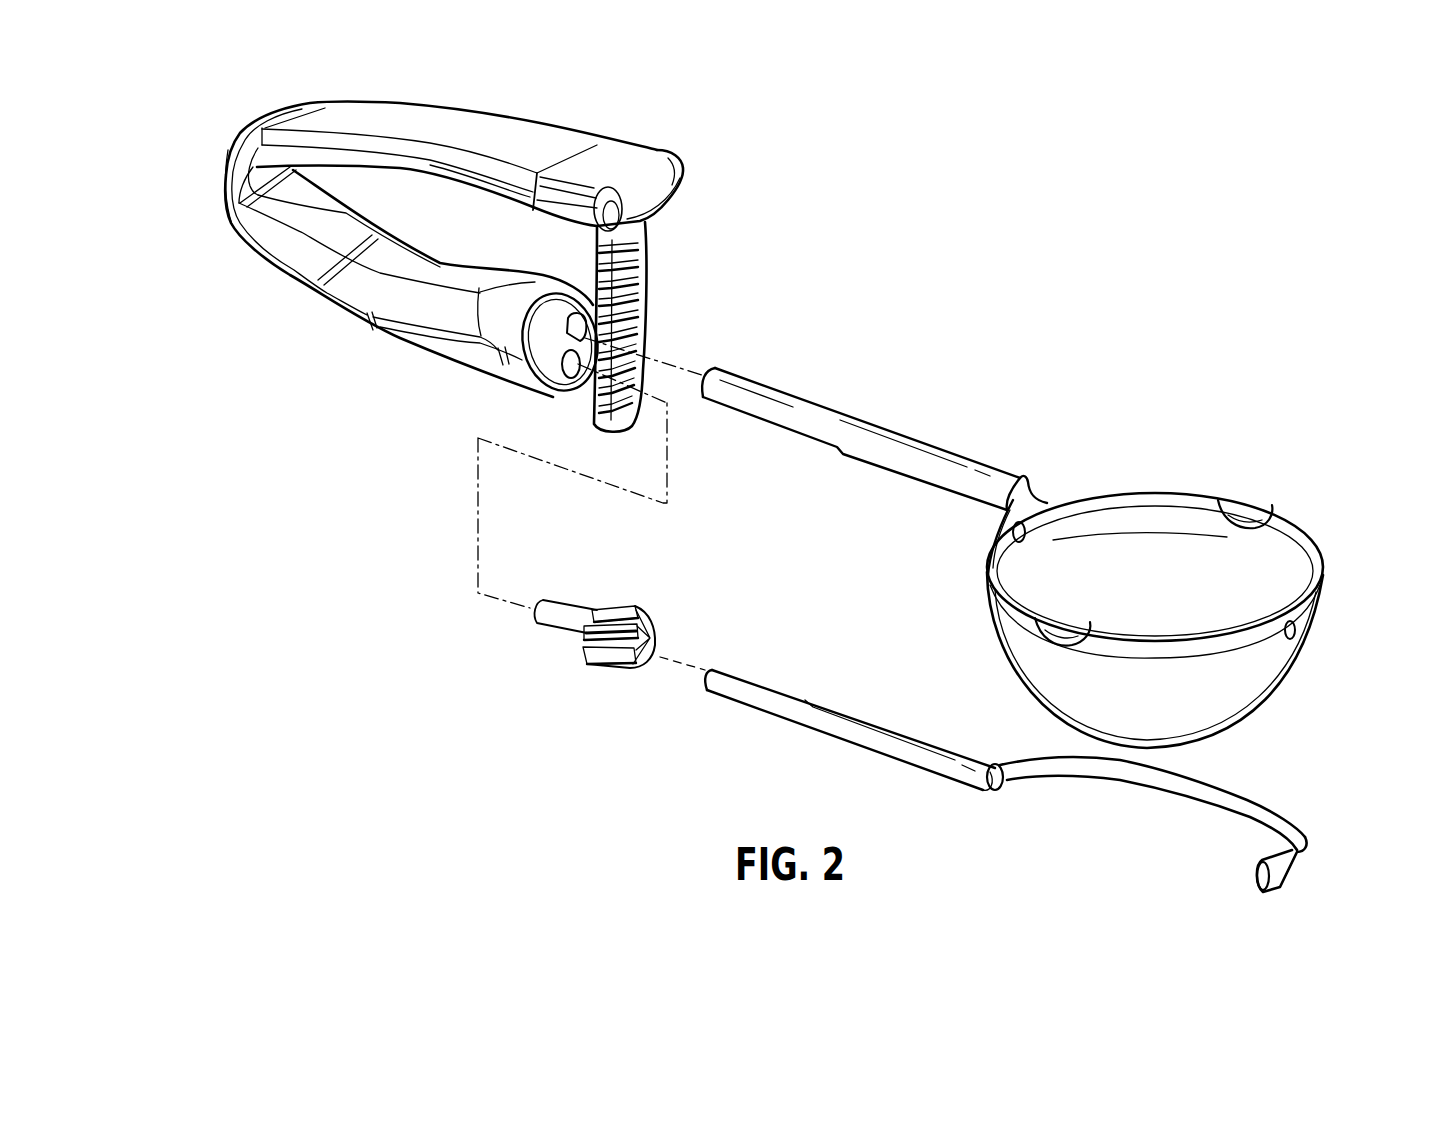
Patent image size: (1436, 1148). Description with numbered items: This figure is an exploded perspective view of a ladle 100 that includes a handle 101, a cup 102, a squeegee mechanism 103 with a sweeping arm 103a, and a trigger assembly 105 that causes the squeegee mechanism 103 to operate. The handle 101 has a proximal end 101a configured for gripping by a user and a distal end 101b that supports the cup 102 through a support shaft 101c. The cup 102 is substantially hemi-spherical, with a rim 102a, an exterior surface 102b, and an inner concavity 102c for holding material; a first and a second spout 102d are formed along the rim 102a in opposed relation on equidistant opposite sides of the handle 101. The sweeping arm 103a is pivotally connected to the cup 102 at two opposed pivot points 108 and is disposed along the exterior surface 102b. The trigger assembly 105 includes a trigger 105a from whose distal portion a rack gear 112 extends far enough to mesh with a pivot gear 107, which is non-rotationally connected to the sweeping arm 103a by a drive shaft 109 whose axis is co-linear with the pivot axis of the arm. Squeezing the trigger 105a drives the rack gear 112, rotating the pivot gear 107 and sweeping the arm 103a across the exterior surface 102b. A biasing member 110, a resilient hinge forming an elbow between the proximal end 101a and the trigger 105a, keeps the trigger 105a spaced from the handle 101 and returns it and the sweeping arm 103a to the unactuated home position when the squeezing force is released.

The ladle 100 is at (785, 500).
The handle 101 is at (440, 282).
The proximal end 101a is at (228, 235).
The distal end 101b is at (443, 368).
The support shaft 101c is at (810, 410).
The cup 102 is at (1206, 586).
The rim 102a is at (1308, 548).
The exterior surface 102b is at (1248, 698).
The inner concavity 102c is at (1115, 522).
The spout 102d is at (1240, 512).
The squeegee mechanism 103 is at (1182, 843).
The sweeping arm 103a is at (1300, 862).
The trigger assembly 105 is at (658, 255).
The trigger 105a is at (612, 163).
The pivot gear 107 is at (599, 672).
The pivot points 108 is at (1025, 535).
The drive shaft 109 is at (778, 715).
The biasing member 110 is at (247, 190).
The rack gear 112 is at (638, 328).